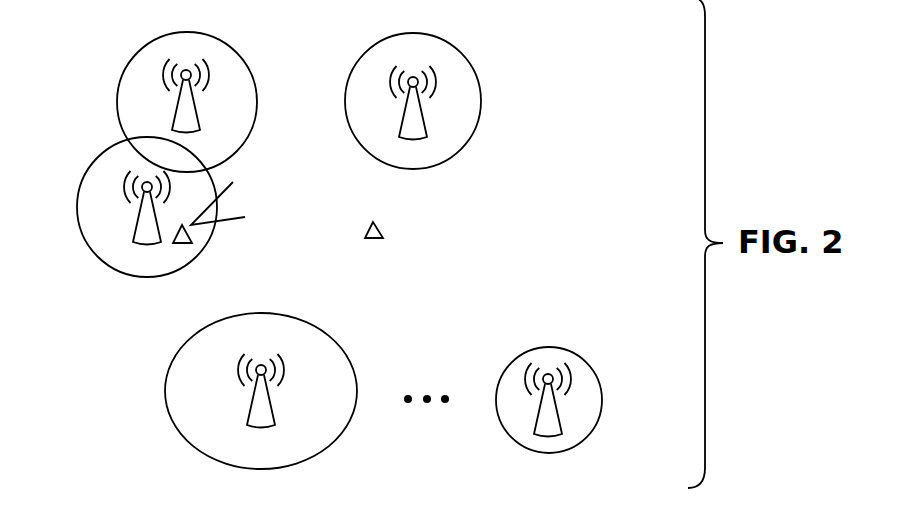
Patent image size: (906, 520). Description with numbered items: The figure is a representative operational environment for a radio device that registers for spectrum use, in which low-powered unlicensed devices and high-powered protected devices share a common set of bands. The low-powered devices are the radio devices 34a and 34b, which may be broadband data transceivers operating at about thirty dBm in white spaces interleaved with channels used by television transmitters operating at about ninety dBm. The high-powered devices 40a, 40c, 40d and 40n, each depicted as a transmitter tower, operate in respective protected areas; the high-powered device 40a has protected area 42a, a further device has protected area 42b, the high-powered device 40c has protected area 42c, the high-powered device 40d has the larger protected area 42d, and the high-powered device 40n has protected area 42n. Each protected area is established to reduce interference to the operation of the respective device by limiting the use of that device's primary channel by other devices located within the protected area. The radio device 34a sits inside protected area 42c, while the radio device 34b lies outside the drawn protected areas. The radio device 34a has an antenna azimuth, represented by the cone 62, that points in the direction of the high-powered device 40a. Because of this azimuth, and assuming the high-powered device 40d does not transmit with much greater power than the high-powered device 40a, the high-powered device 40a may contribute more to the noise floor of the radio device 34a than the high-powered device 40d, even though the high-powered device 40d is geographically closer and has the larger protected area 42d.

The protected area 42a is at (468, 88).
The protected area 42b is at (135, 82).
The protected area 42c is at (92, 200).
The protected area 42d is at (185, 365).
The protected area 42n is at (590, 402).
The high-powered device 40a is at (183, 113).
The high-powered device 40c is at (143, 230).
The high-powered device 40d is at (262, 398).
The high-powered device 40n is at (548, 423).
The radio device 34a is at (187, 234).
The radio device 34b is at (383, 233).
The cone 62 is at (225, 208).